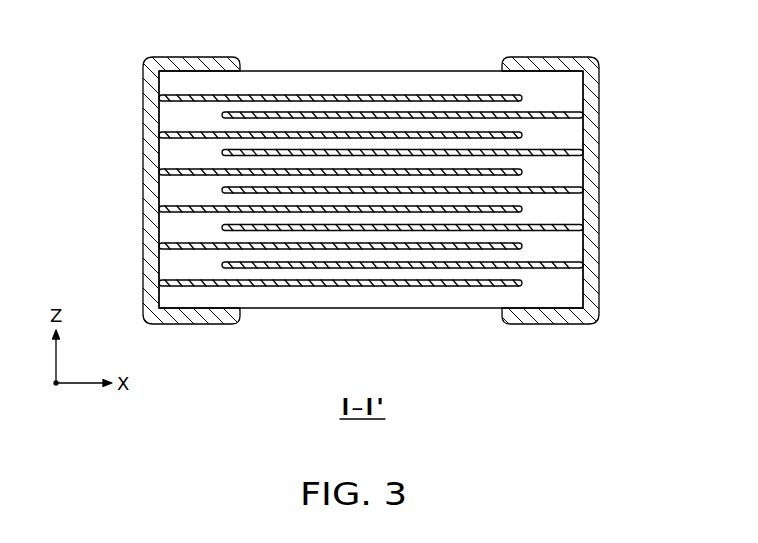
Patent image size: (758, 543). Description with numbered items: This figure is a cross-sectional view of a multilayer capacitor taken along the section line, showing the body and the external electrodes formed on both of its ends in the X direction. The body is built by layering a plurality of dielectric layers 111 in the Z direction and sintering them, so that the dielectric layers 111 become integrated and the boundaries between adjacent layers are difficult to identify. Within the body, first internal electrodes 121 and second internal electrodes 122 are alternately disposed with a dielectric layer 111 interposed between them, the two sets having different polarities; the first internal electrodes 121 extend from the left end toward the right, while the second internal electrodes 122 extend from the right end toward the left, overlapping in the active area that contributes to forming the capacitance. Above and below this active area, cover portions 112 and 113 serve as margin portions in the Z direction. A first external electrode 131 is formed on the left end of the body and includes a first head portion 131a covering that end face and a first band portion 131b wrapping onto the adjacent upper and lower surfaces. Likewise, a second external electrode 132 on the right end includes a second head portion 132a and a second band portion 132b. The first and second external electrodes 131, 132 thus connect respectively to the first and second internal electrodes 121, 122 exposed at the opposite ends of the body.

The dielectric layer 111 is at (175, 155).
The cover portion 112 is at (376, 78).
The cover portion 113 is at (374, 302).
The first internal electrode 121 is at (296, 95).
The second internal electrode 122 is at (462, 112).
The first external electrode 131 is at (60, 62).
The first head portion 131a is at (150, 128).
The first band portion 131b is at (193, 56).
The second external electrode 132 is at (684, 62).
The second head portion 132a is at (598, 128).
The second band portion 132b is at (548, 58).